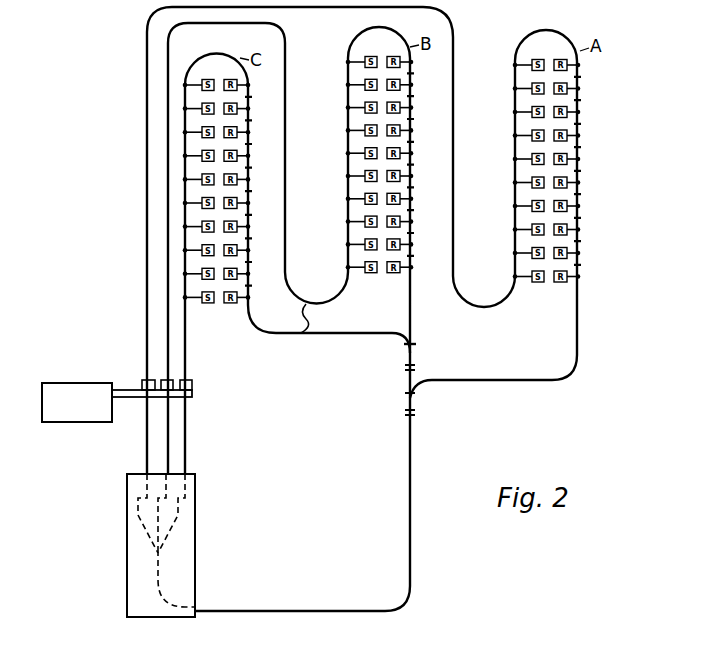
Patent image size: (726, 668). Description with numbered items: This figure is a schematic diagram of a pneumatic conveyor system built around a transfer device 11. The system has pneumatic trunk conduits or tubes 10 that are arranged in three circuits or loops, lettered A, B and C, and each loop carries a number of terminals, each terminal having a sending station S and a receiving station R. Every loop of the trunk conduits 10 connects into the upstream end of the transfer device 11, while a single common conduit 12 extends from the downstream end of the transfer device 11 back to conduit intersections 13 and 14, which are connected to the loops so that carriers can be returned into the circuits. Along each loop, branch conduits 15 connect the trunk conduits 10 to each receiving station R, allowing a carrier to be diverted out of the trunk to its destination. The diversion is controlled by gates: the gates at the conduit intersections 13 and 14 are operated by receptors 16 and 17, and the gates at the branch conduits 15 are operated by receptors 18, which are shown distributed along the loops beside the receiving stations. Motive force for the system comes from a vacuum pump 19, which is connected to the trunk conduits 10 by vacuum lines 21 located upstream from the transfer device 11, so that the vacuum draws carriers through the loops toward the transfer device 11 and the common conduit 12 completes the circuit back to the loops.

The pneumatic trunk conduits 10 is at (147, 130).
The transfer device 11 is at (124, 537).
The common conduit 12 is at (308, 610).
The conduit intersection 13 is at (412, 394).
The conduit intersection 14 is at (407, 348).
The branch conduits 15 is at (240, 226).
The receptor 16 is at (405, 418).
The receptor 17 is at (414, 365).
The receptors 18 is at (249, 87).
The vacuum pump 19 is at (79, 383).
The vacuum lines 21 is at (124, 390).